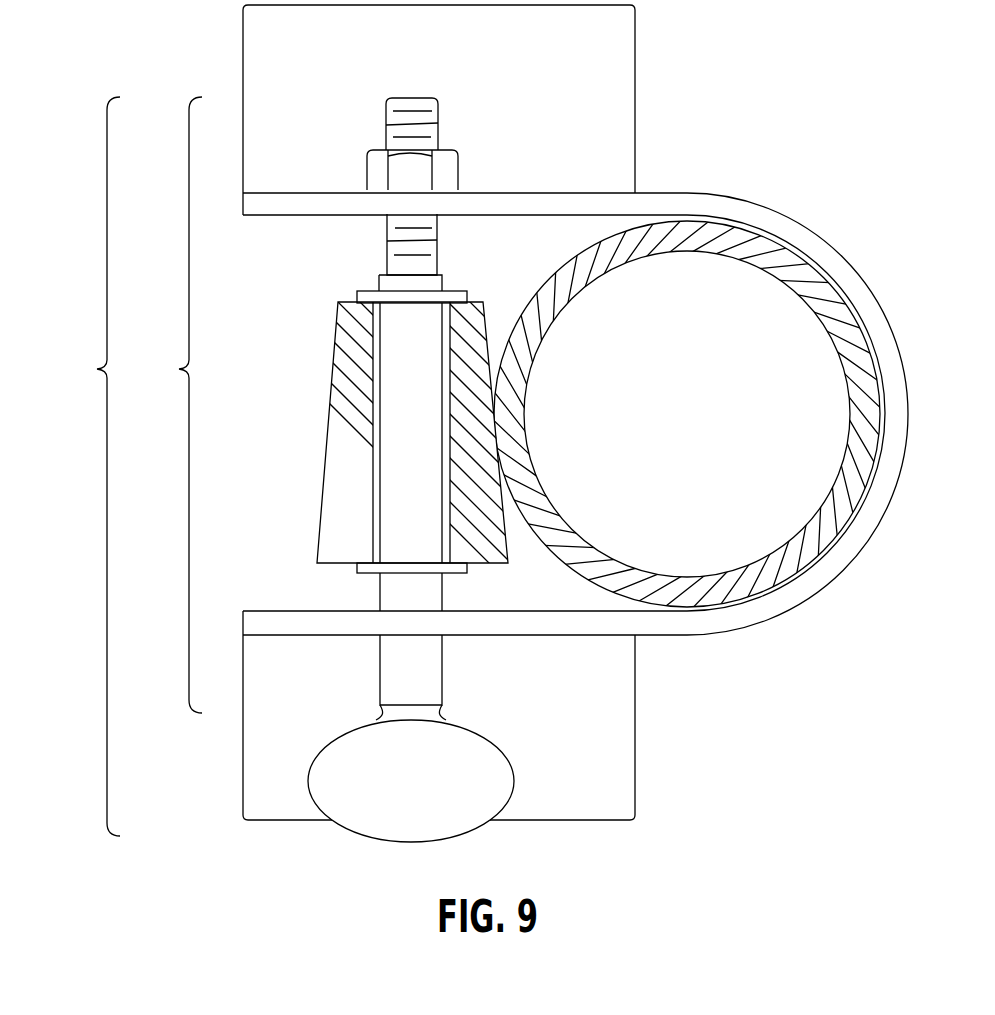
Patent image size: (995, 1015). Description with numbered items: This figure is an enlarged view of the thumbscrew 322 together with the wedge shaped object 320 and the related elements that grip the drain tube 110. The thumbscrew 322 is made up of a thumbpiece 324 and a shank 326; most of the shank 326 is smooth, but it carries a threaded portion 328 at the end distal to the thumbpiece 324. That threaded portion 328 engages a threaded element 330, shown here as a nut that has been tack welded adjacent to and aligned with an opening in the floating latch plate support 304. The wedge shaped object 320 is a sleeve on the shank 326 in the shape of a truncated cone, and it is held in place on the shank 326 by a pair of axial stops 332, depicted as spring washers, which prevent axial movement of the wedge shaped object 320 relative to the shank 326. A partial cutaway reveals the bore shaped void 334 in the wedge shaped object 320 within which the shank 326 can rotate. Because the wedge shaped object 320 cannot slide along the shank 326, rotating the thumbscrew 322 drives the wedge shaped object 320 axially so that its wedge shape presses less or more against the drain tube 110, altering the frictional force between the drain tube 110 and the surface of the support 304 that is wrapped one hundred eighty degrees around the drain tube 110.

The floating latch plate support 304 is at (557, 69).
The drain tube 110 is at (552, 322).
The wedge shaped object 320 is at (333, 363).
The thumbscrew 322 is at (82, 466).
The thumbpiece 324 is at (503, 770).
The shank 326 is at (516, 405).
The threaded portion 328 is at (439, 128).
The threaded element 330 is at (370, 152).
The axial stops 332 is at (357, 295).
The bore shaped void 334 is at (397, 420).